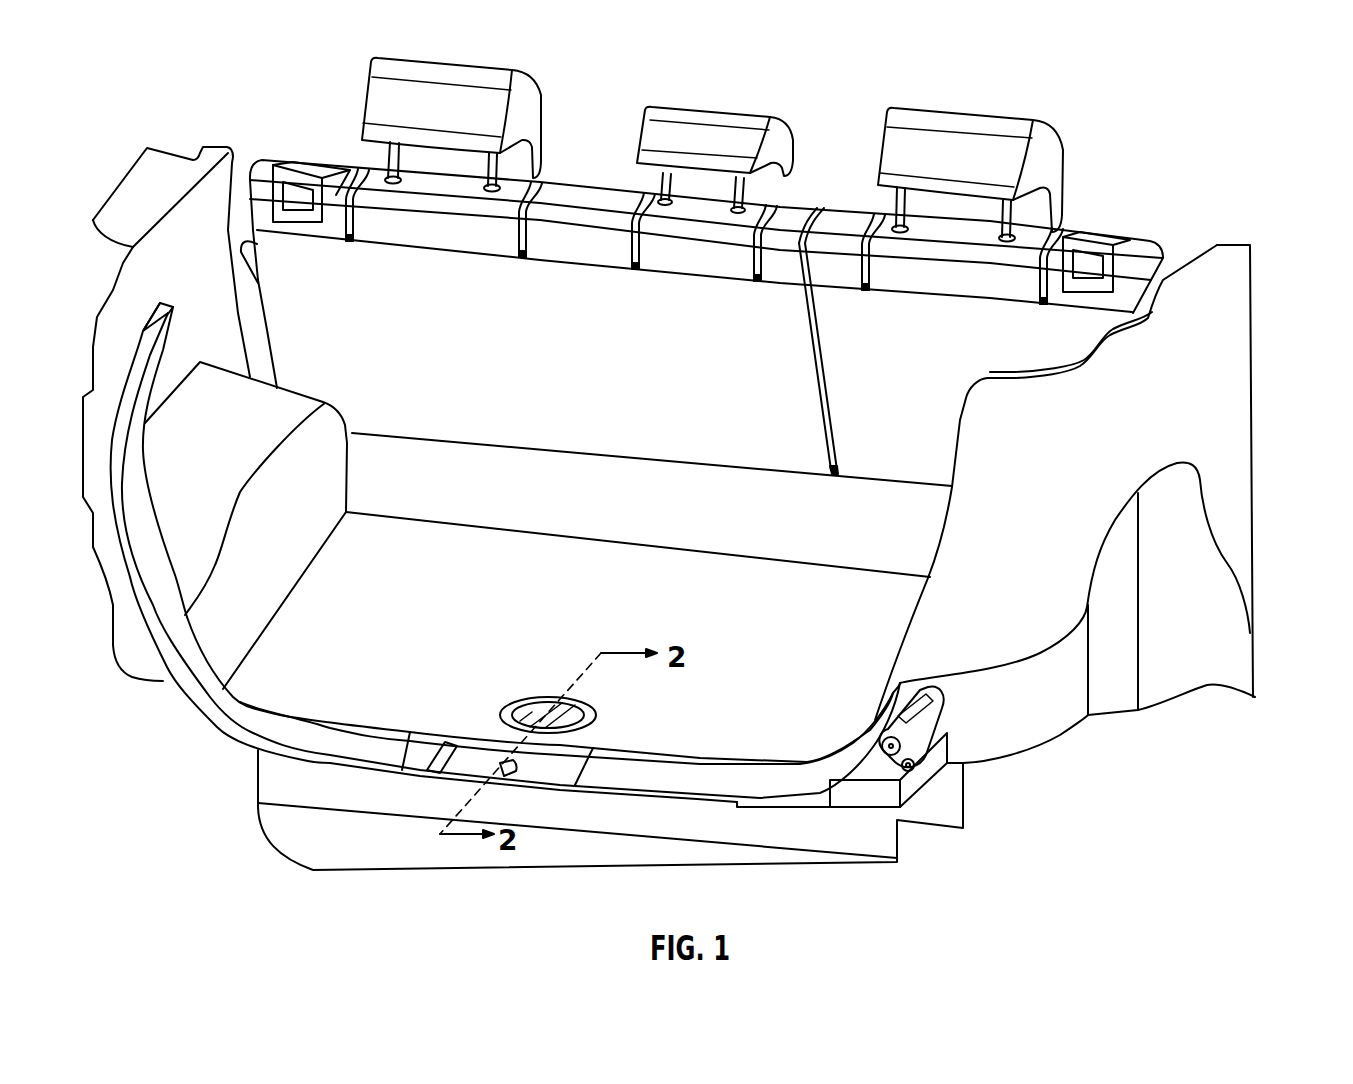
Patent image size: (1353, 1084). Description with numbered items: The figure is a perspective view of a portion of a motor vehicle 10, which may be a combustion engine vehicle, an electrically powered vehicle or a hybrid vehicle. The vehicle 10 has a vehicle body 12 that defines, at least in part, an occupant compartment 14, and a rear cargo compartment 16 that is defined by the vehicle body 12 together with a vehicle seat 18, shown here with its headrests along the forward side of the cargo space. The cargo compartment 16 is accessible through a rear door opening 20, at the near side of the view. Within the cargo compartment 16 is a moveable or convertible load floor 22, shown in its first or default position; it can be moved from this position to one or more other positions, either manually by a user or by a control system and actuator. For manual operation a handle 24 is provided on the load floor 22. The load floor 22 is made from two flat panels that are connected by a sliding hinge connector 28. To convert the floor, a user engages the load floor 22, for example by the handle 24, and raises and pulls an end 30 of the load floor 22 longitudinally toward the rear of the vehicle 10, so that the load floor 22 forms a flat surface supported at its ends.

The motor vehicle 10 is at (192, 75).
The vehicle body 12 is at (1240, 352).
The occupant compartment 14 is at (1110, 86).
The rear cargo compartment 16 is at (553, 296).
The vehicle seat 18 is at (830, 205).
The rear door opening 20 is at (737, 780).
The load floor 22 is at (660, 568).
The handle 24 is at (503, 707).
The sliding hinge connector 28 is at (500, 529).
The end of the load floor 30 is at (358, 712).